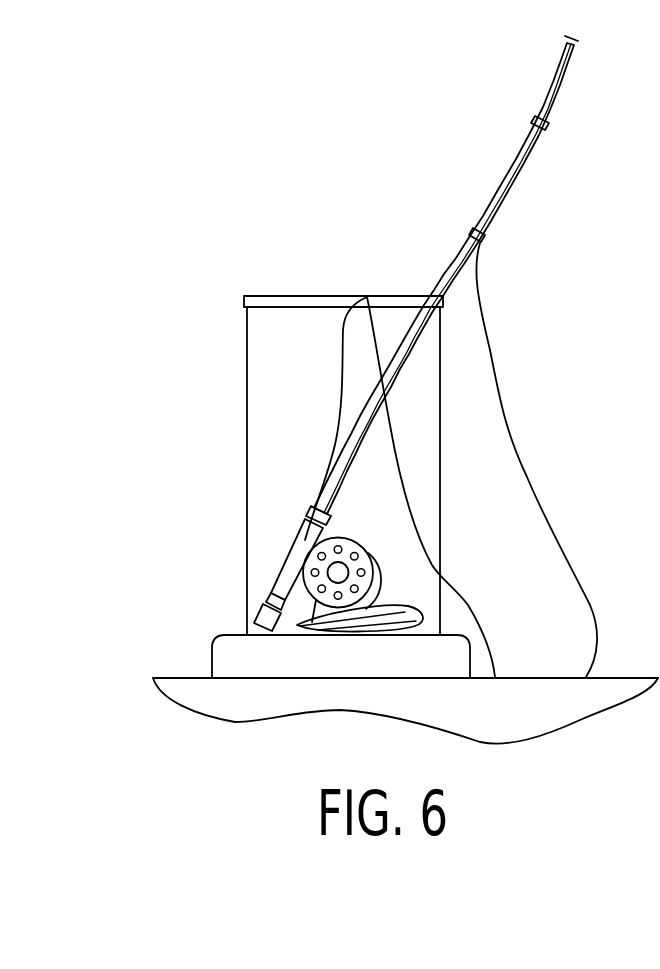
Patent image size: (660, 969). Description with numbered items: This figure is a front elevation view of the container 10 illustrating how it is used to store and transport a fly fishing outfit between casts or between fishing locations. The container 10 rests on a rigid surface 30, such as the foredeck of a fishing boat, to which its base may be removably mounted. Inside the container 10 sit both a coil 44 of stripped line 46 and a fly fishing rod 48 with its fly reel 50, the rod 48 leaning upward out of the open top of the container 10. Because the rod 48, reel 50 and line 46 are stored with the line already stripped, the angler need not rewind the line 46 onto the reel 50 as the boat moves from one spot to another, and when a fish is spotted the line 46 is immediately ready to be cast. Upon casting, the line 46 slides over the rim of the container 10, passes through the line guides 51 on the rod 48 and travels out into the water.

The container 10 is at (298, 274).
The rigid surface 30 is at (178, 677).
The coil 44 is at (397, 607).
The stripped line 46 is at (337, 437).
The fly fishing rod 48 is at (482, 193).
The fly reel 50 is at (338, 538).
The line guides 51 is at (548, 128).